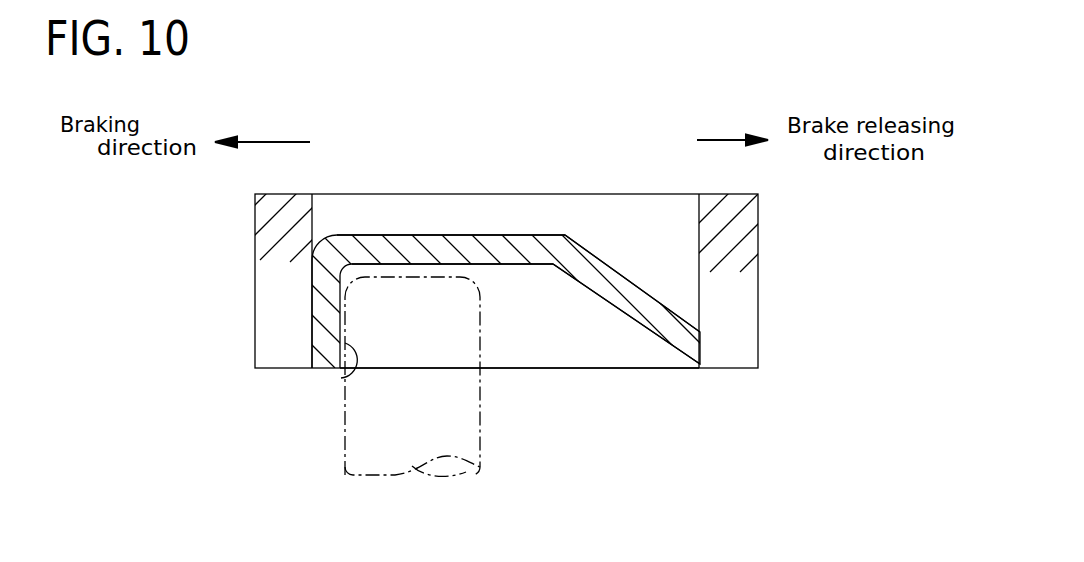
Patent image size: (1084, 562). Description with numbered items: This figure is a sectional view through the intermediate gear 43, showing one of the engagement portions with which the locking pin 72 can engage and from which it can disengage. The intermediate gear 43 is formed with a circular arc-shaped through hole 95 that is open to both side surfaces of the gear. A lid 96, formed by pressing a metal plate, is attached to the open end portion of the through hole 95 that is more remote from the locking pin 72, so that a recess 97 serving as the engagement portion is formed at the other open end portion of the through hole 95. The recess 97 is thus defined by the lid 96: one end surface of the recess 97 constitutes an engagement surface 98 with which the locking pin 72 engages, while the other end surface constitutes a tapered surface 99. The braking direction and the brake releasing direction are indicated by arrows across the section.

The intermediate gear 43 is at (250, 209).
The locking pin 72 is at (363, 455).
The through hole 95 is at (315, 222).
The lid 96 is at (442, 247).
The recess 97 is at (538, 343).
The engagement surface 98 is at (341, 378).
The tapered surface 99 is at (643, 327).